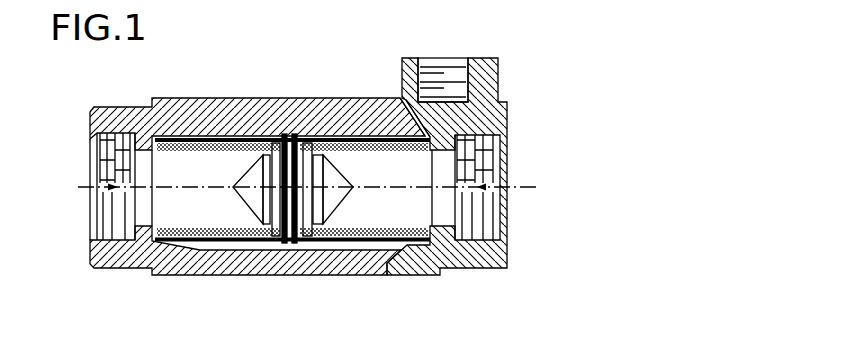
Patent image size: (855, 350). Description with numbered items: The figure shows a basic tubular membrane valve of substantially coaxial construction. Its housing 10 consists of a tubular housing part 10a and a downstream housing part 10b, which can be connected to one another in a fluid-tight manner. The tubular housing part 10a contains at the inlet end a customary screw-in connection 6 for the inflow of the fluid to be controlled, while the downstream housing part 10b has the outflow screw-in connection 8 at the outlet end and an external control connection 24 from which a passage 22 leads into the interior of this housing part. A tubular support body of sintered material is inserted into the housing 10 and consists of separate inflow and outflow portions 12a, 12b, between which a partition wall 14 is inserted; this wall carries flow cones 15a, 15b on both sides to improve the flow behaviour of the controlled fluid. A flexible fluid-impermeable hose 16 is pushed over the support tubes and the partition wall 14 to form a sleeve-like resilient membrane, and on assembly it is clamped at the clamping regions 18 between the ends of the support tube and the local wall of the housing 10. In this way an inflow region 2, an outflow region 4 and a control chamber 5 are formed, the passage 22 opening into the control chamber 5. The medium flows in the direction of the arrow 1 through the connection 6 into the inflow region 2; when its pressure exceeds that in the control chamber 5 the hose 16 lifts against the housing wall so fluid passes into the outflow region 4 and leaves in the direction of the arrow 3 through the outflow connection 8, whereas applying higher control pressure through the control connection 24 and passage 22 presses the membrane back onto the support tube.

The arrow 1 is at (108, 184).
The inflow region 2 is at (201, 218).
The arrow 3 is at (486, 190).
The outflow region 4 is at (397, 216).
The control chamber 5 is at (161, 142).
The screw-in connection 6 is at (105, 218).
The outflow screw-in connection 8 is at (483, 218).
The housing 10 is at (322, 185).
The tubular housing part 10a is at (156, 120).
The downstream housing part 10b is at (480, 117).
The inflow portion 12a is at (221, 243).
The outflow portion 12b is at (355, 242).
The partition wall 14 is at (291, 134).
The flow cone 15a is at (252, 180).
The flow cone 15b is at (337, 178).
The hose 16 is at (291, 245).
The clamping regions 18 is at (95, 138).
The passage 22 is at (410, 106).
The external control connection 24 is at (445, 73).